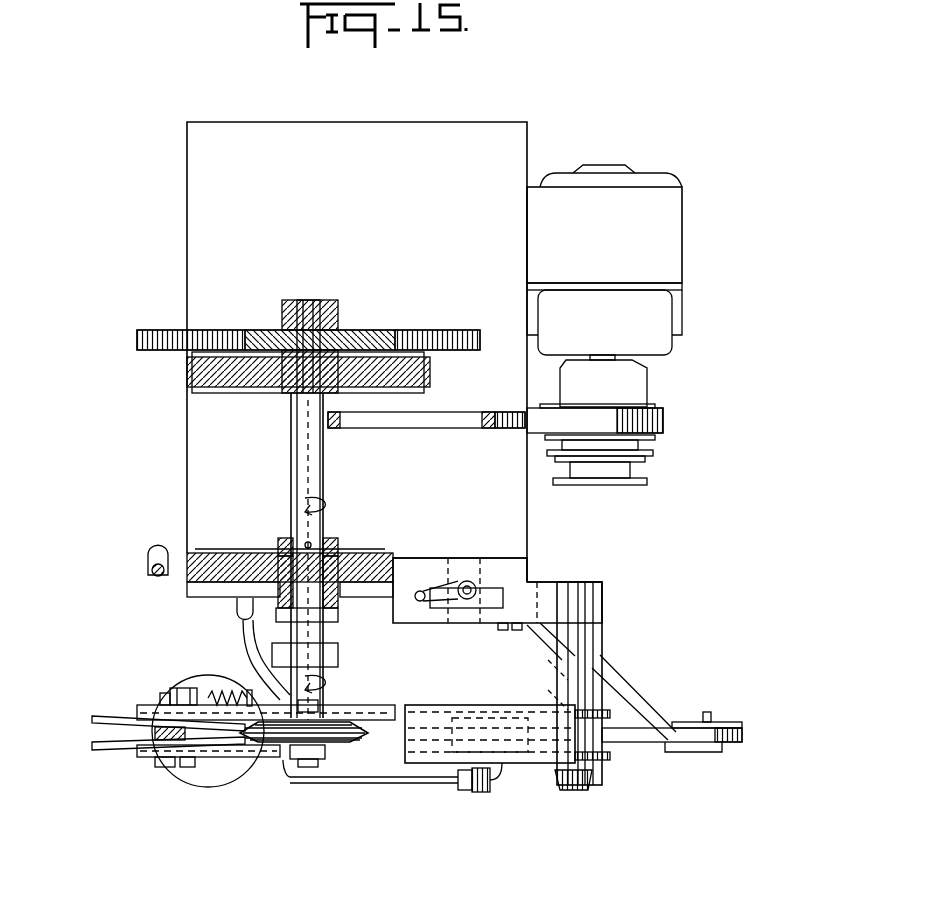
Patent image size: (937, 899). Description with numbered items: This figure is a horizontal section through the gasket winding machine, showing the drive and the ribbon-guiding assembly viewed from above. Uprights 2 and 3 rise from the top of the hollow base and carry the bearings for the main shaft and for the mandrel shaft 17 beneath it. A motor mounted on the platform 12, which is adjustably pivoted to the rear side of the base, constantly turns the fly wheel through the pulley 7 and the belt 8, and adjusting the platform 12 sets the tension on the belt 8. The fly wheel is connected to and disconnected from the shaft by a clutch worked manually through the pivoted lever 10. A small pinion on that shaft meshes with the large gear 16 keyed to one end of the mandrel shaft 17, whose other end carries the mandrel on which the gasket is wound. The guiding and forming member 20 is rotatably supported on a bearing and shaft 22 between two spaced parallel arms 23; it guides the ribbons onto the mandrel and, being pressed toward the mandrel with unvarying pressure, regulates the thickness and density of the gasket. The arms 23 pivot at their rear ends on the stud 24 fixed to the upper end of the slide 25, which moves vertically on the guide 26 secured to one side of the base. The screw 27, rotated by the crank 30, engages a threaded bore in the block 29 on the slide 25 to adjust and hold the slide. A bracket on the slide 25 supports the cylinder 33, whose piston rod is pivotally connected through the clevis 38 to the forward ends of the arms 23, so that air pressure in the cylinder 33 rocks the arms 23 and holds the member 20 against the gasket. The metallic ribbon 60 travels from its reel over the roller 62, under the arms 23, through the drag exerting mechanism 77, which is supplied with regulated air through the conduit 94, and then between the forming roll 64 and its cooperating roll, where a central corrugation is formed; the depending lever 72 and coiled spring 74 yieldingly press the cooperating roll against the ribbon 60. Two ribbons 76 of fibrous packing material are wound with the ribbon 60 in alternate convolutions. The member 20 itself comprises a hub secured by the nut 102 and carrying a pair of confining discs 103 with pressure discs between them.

The upright 2 is at (233, 562).
The upright 3 is at (232, 375).
The pulley 7 is at (658, 440).
The belt 8 is at (337, 430).
The pivoted lever 10 is at (148, 578).
The platform 12 is at (682, 335).
The large gear 16 is at (143, 347).
The mandrel shaft 17 is at (296, 470).
The guiding and forming member 20 is at (212, 797).
The shaft 22 is at (318, 702).
The arms 23 is at (340, 748).
The stud 24 is at (625, 790).
The slide 25 is at (405, 622).
The guide 26 is at (523, 570).
The screw 27 is at (470, 600).
The block 29 is at (447, 603).
The crank 30 is at (421, 591).
The cylinder 33 is at (180, 780).
The clevis 38 is at (222, 765).
The metallic ribbon 60 is at (745, 735).
The roller 62 is at (740, 745).
The forming roll 64 is at (138, 755).
The depending lever 72 is at (205, 695).
The coiled spring 74 is at (230, 692).
The ribbons of fibrous packing material 76 is at (96, 720).
The drag exerting mechanism 77 is at (522, 770).
The conduit 94 is at (240, 632).
The nut 102 is at (300, 745).
The confining discs 103 is at (325, 755).